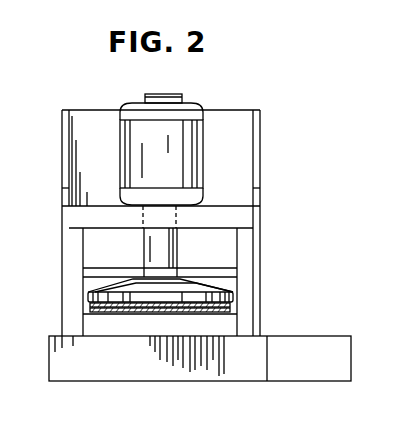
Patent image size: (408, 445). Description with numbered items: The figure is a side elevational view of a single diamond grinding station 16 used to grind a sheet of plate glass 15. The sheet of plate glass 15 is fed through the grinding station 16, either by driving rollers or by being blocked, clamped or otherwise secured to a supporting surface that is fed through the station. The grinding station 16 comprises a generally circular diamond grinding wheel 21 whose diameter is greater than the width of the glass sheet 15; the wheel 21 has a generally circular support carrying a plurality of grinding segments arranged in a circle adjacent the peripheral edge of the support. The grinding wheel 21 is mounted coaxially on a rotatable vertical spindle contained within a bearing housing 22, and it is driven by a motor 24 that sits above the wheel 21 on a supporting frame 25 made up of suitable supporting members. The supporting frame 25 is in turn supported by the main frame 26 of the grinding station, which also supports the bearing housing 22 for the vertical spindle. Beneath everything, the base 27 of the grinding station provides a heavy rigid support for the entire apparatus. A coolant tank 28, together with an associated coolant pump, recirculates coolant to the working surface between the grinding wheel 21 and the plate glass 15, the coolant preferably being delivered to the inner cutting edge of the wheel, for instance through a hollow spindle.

The sheet of plate glass 15 is at (160, 312).
The initial grinding station 16 is at (278, 192).
The diamond grinding wheel 21 is at (213, 288).
The bearing housing 22 is at (178, 247).
The motor 24 is at (186, 109).
The supporting frame 25 is at (258, 128).
The main frame 26 is at (73, 209).
The base 27 is at (168, 374).
The coolant tank 28 is at (314, 374).